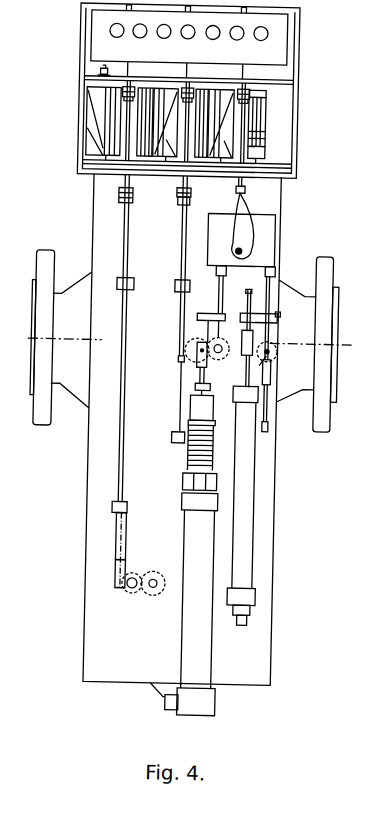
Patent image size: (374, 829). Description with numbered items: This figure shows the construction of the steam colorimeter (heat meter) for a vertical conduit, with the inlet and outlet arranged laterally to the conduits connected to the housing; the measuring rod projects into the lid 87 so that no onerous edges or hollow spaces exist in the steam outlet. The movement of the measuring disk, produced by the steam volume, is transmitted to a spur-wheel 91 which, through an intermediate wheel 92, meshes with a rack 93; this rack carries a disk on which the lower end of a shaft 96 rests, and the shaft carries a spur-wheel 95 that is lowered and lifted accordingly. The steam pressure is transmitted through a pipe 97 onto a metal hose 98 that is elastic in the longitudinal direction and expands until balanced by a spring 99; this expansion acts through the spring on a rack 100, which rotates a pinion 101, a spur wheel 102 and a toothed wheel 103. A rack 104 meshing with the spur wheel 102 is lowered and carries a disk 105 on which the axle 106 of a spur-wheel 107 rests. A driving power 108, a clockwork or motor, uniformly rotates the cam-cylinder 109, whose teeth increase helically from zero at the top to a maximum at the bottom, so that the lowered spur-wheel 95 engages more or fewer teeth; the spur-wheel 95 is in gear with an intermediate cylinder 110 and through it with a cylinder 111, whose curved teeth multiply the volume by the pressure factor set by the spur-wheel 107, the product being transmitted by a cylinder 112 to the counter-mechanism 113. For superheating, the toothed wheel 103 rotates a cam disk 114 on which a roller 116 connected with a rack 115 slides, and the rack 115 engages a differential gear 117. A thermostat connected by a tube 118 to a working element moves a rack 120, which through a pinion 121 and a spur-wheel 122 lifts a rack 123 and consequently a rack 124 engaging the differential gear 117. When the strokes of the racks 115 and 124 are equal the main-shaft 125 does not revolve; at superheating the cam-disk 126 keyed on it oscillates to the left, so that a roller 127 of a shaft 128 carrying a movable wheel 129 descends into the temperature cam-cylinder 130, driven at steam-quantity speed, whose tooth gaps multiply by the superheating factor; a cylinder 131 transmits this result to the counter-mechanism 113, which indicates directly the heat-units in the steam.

The lid 87 is at (183, 702).
The spur-wheel 91 is at (154, 589).
The intermediate wheel 92 is at (126, 577).
The rack 93 is at (121, 235).
The spur-wheel 95 is at (113, 92).
The shaft 96 is at (124, 128).
The pipe 97 is at (114, 194).
The metal hose 98 is at (200, 535).
The spring 99 is at (198, 462).
The rack 100 is at (202, 363).
The pinion 101 is at (196, 350).
The spur wheel 102 is at (194, 348).
The toothed wheel 103 is at (216, 353).
The rack 104 is at (178, 298).
The disk 105 is at (177, 204).
The axle 106 is at (177, 197).
The spur-wheel 107 is at (182, 90).
The driving power 108 is at (99, 72).
The cam-cylinder 109 is at (100, 112).
The intermediate cylinder 110 is at (132, 141).
The cylinder 111 is at (146, 158).
The cylinder 112 is at (259, 151).
The counter-mechanism 113 is at (260, 45).
The cam disk 114 is at (250, 338).
The rack 115 is at (172, 271).
The roller 116 is at (205, 334).
The differential gear 117 is at (259, 228).
The tube 118 is at (244, 462).
The rack 120 is at (270, 333).
The pinion 121 is at (261, 364).
The spur-wheel 122 is at (268, 349).
The rack 123 is at (269, 378).
The rack 124 is at (272, 273).
The main-shaft 125 is at (238, 249).
The cam-disk 126 is at (237, 206).
The roller 127 is at (238, 192).
The shaft 128 is at (239, 124).
The movable wheel 129 is at (256, 95).
The cam-cylinder 130 is at (259, 137).
The cylinder 131 is at (256, 108).